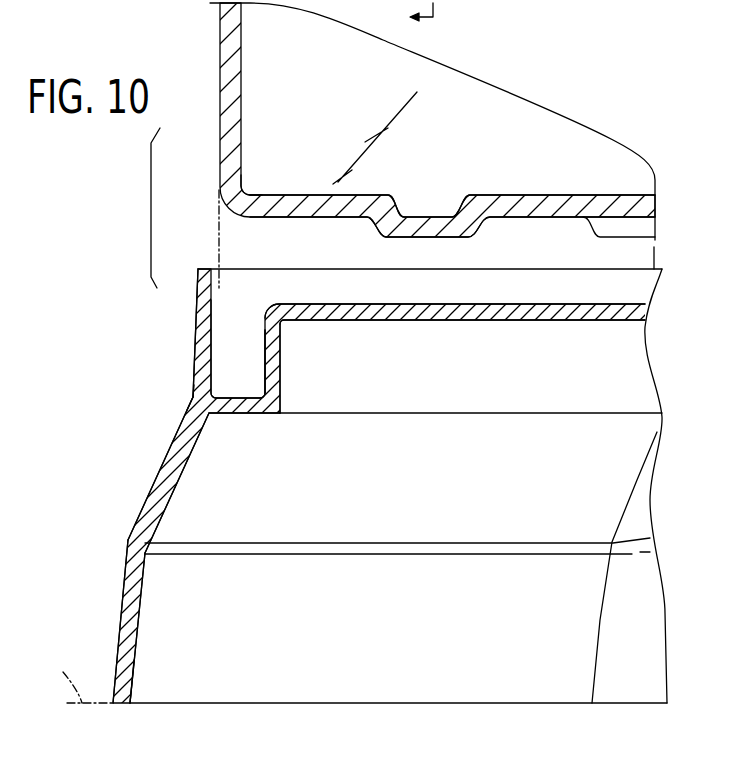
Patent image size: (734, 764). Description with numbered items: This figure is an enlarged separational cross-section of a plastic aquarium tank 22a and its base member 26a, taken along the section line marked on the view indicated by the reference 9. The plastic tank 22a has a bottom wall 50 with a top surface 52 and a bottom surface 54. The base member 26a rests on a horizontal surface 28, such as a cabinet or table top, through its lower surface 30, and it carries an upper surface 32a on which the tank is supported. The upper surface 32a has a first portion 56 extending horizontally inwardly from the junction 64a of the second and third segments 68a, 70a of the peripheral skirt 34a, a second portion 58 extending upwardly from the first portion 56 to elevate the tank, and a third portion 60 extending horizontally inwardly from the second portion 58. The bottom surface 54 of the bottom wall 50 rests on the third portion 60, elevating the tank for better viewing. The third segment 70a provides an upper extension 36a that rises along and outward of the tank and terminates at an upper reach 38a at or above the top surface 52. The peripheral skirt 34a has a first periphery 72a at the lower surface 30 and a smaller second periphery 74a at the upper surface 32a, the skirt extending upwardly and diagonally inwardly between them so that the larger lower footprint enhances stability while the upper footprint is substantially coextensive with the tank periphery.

The plastic aquarium tank 22a is at (228, 35).
The FIG. 9 view indicator 9 is at (432, 15).
The bottom wall 50 is at (320, 195).
The top surface 52 is at (272, 193).
The bottom surface 54 is at (297, 218).
The upper reach 38a is at (205, 264).
The upper extension 36a is at (197, 313).
The third segment 70a is at (193, 353).
The junction 64a is at (190, 404).
The second segment 68a is at (160, 473).
The base member 26a is at (128, 540).
The peripheral skirt 34a is at (120, 602).
The horizontal surface 28 is at (71, 676).
The first periphery 72a is at (133, 698).
The lower surface 30 is at (120, 707).
The second periphery 74a is at (210, 415).
The upper surface 32a is at (278, 414).
The second portion 58 is at (262, 347).
The first portion 56 is at (237, 396).
The third portion 60 is at (303, 303).